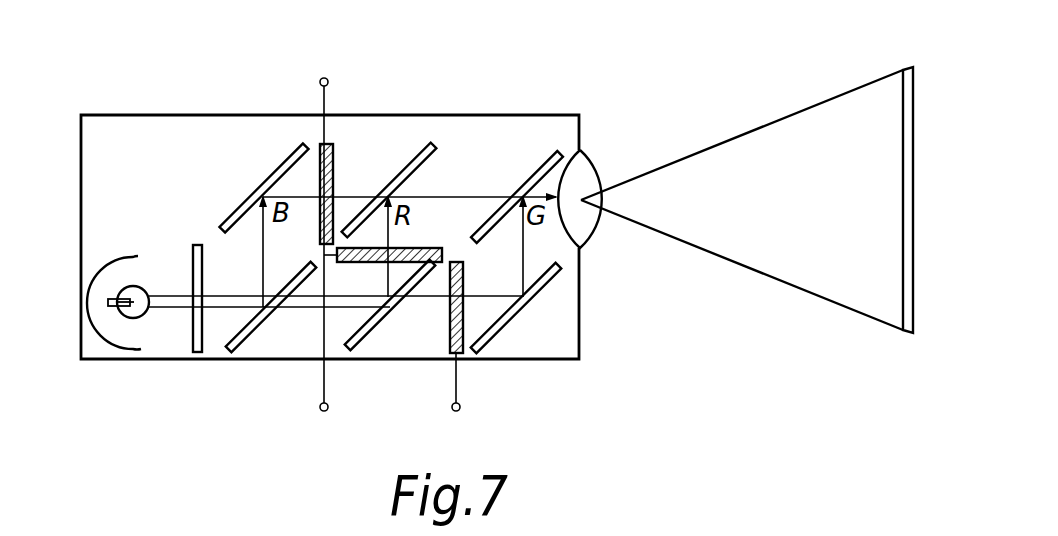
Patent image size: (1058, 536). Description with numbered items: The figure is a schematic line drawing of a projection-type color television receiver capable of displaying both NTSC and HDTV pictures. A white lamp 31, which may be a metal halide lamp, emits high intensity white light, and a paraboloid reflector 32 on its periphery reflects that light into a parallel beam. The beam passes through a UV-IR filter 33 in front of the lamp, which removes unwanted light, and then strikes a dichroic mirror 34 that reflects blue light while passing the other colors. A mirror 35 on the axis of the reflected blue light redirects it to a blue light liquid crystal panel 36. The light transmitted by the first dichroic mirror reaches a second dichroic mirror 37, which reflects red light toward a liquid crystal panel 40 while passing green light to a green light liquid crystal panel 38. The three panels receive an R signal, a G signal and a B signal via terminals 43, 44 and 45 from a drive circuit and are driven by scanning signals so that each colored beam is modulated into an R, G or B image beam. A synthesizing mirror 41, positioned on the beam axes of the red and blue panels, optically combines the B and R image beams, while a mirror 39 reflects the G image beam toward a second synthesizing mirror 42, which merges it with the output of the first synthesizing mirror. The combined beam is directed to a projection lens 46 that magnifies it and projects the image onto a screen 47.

The white lamp 31 is at (140, 289).
The reflector 32 is at (123, 256).
The UV-IR filter 33 is at (194, 352).
The dichroic mirror 34 is at (248, 340).
The mirror 35 is at (244, 200).
The blue light liquid crystal panel 36 is at (333, 156).
The dichroic mirror 37 is at (382, 330).
The green light liquid crystal panel 38 is at (450, 338).
The mirror 39 is at (540, 300).
The liquid crystal panel 40 is at (425, 248).
The synthesizing mirror 41 is at (430, 163).
The synthesizing mirror 42 is at (542, 168).
The terminal 43 is at (328, 403).
The terminal 44 is at (481, 384).
The terminal 45 is at (328, 80).
The projection lens 46 is at (592, 166).
The screen 47 is at (903, 310).